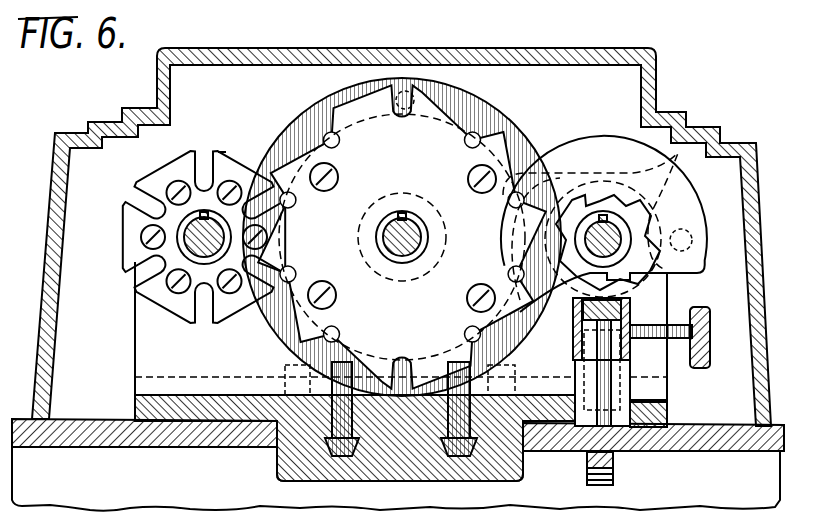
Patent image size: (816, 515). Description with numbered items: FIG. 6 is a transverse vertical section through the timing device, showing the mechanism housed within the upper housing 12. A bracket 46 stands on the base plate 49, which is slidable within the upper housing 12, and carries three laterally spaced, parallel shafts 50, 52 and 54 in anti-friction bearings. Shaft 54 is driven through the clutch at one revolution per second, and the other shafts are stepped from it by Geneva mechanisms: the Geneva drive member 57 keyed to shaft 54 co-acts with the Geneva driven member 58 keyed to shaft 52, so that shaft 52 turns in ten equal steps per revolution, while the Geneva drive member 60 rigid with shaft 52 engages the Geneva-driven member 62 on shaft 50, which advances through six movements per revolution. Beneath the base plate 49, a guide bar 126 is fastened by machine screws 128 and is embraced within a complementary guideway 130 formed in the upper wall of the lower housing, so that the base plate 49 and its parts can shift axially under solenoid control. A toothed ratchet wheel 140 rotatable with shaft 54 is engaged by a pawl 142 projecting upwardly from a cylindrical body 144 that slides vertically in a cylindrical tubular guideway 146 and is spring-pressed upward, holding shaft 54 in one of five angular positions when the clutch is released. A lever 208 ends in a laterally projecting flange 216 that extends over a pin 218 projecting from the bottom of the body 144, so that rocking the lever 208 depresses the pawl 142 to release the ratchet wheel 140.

The upper housing 12 is at (752, 220).
The bracket 46 is at (147, 358).
The base plate 49 is at (147, 406).
The shaft 50 is at (185, 232).
The shaft 52 is at (405, 262).
The shaft 54 is at (615, 216).
The Geneva drive member 57 is at (690, 195).
The Geneva driven member 58 is at (441, 125).
The Geneva drive member 60 is at (405, 92).
The Geneva-driven member 62 is at (226, 152).
The guide bar 126 is at (345, 480).
The machine screw 128 is at (468, 452).
The guideway 130 is at (278, 452).
The toothed ratchet wheel 140 is at (678, 158).
The pawl 142 is at (600, 325).
The cylindrical body 144 is at (580, 362).
The cylindrical tubular guideway 146 is at (578, 343).
The lever 208 is at (710, 348).
The flange 216 is at (648, 340).
The pin 218 is at (668, 370).